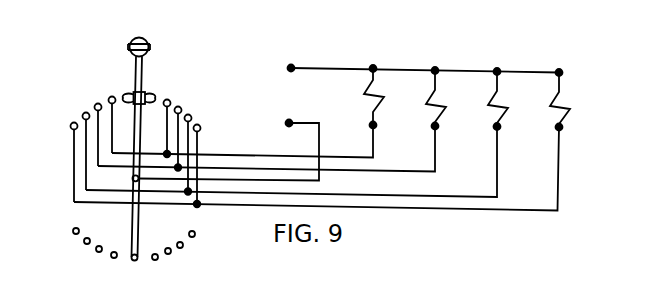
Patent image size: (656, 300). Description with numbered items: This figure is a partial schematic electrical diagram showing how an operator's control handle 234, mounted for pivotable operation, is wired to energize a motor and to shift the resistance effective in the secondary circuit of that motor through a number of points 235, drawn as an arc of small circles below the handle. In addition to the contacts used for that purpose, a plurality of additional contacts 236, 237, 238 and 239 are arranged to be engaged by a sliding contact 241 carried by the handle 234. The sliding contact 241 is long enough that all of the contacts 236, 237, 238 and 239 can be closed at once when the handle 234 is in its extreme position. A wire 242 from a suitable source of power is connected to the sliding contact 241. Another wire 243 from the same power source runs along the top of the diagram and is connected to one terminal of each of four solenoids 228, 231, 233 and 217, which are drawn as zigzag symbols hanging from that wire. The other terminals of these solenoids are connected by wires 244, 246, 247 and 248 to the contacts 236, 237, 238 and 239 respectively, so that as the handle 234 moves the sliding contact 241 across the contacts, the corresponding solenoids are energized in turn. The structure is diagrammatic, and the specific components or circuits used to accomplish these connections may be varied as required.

The operator's control handle 234 is at (143, 38).
The sliding contact 241 is at (150, 95).
The additional contact 236 is at (167, 100).
The additional contact 237 is at (181, 108).
The additional contact 238 is at (192, 116).
The additional contact 239 is at (200, 128).
The points 235 is at (192, 238).
The wire 243 is at (345, 67).
The wire 242 is at (349, 106).
The solenoid 228 is at (393, 99).
The solenoid 231 is at (457, 101).
The solenoid 233 is at (518, 101).
The solenoid 217 is at (581, 102).
The wire 244 is at (375, 138).
The wire 246 is at (437, 139).
The wire 247 is at (499, 139).
The wire 248 is at (561, 139).